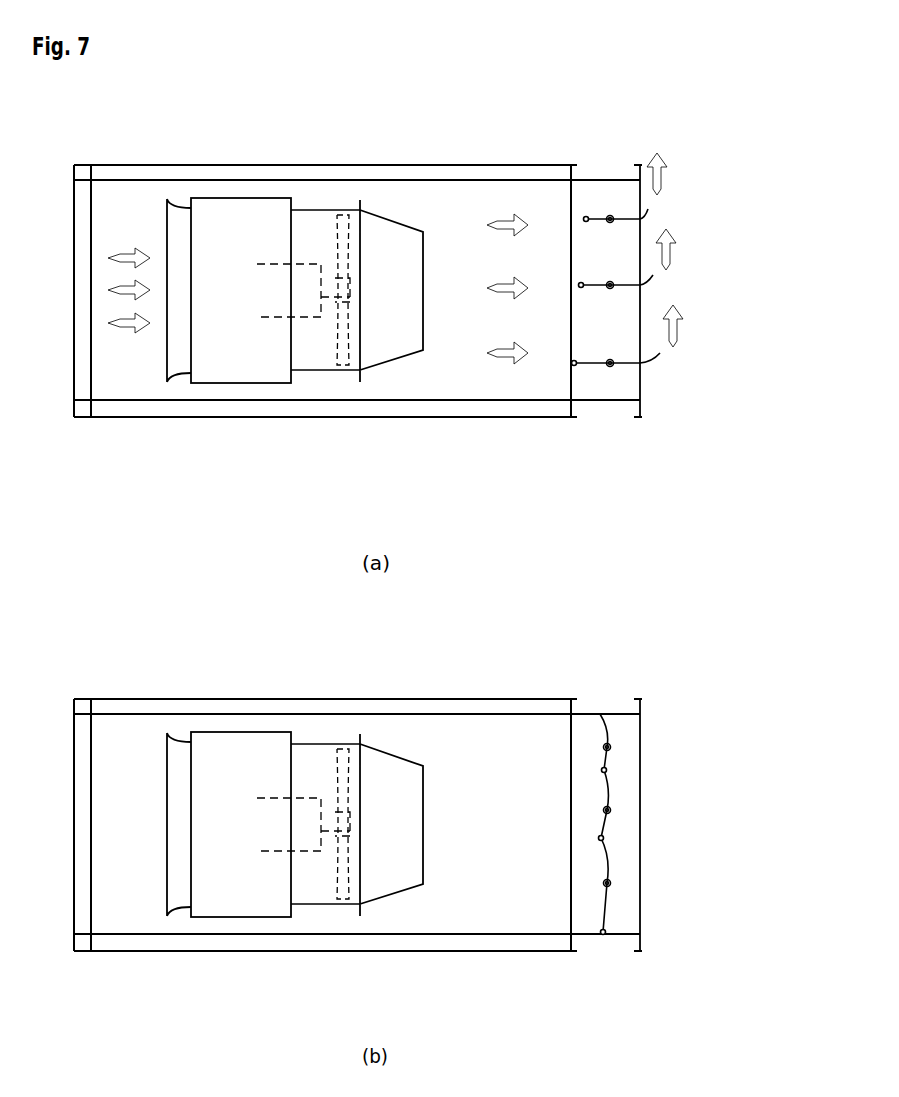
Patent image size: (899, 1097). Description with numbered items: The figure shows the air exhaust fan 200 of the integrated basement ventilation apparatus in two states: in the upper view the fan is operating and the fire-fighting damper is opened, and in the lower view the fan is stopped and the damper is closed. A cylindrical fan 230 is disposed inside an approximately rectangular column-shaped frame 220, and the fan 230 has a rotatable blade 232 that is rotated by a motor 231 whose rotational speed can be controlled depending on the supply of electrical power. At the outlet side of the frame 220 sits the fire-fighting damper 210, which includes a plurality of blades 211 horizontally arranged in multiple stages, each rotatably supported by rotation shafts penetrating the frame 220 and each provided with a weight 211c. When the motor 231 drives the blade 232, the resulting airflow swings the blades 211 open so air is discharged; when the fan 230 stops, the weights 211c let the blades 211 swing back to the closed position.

The air exhaust fan 200 is at (271, 127).
The fire-fighting damper 210 is at (605, 405).
The blades 211 is at (628, 365).
The weight 211c is at (586, 216).
The frame 220 is at (480, 402).
The fan 230 is at (212, 366).
The motor 231 is at (307, 270).
The rotatable blade 232 is at (344, 363).